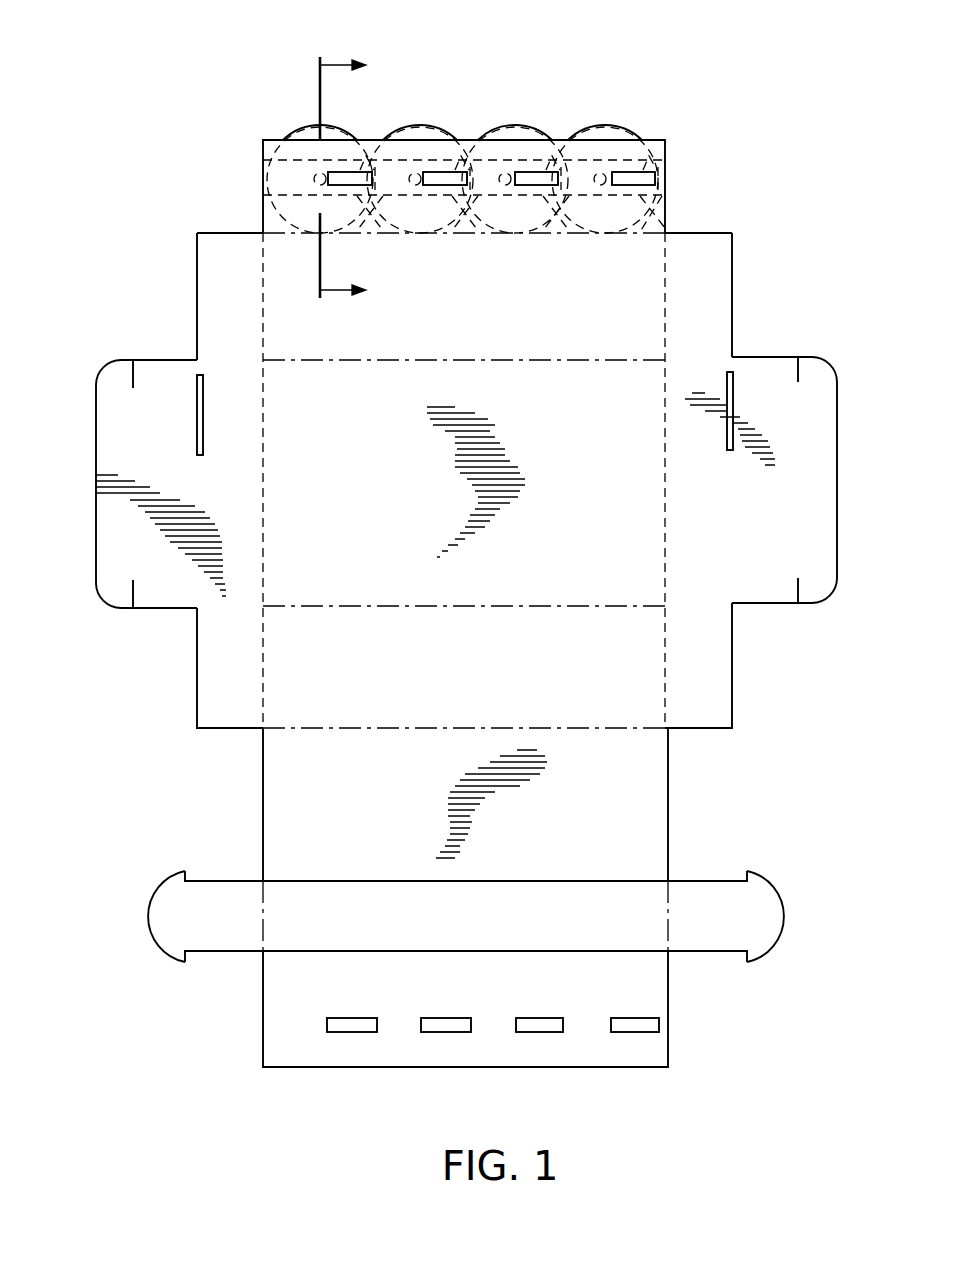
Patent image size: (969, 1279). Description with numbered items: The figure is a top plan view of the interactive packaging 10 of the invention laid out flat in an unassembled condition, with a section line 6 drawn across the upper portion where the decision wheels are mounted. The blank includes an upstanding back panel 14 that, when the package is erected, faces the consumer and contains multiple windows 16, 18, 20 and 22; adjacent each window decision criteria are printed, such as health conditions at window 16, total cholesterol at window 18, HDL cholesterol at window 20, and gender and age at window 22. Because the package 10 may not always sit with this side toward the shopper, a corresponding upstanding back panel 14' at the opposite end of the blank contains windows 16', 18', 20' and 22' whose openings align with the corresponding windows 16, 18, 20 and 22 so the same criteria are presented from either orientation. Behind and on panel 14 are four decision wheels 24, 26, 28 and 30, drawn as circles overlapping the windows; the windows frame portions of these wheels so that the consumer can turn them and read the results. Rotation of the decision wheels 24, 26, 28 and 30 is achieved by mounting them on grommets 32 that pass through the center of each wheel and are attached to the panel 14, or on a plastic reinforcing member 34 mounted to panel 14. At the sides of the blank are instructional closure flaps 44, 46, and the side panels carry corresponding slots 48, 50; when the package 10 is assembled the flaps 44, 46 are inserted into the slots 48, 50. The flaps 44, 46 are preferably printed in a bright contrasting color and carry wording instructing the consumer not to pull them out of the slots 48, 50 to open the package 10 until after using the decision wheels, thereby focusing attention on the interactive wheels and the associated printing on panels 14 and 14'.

The interactive packaging 10 is at (177, 99).
The upstanding back panel 14 is at (499, 434).
The corresponding upstanding back panel 14' is at (501, 897).
The window 16 is at (353, 136).
The window 18 is at (447, 138).
The window 20 is at (538, 137).
The window 22 is at (637, 137).
The window 16' is at (352, 1063).
The window 18' is at (446, 1063).
The window 20' is at (539, 1063).
The window 22' is at (635, 1063).
The decision wheel 24 is at (305, 130).
The decision wheel 26 is at (417, 132).
The decision wheel 28 is at (510, 132).
The decision wheel 30 is at (603, 132).
The grommet 32 is at (265, 168).
The plastic reinforcing member 34 is at (275, 183).
The instructional closure flap 44 is at (768, 928).
The instructional closure flap 46 is at (162, 933).
The slot 48 is at (735, 382).
The slot 50 is at (197, 385).
The section line 6- 6 is at (353, 178).